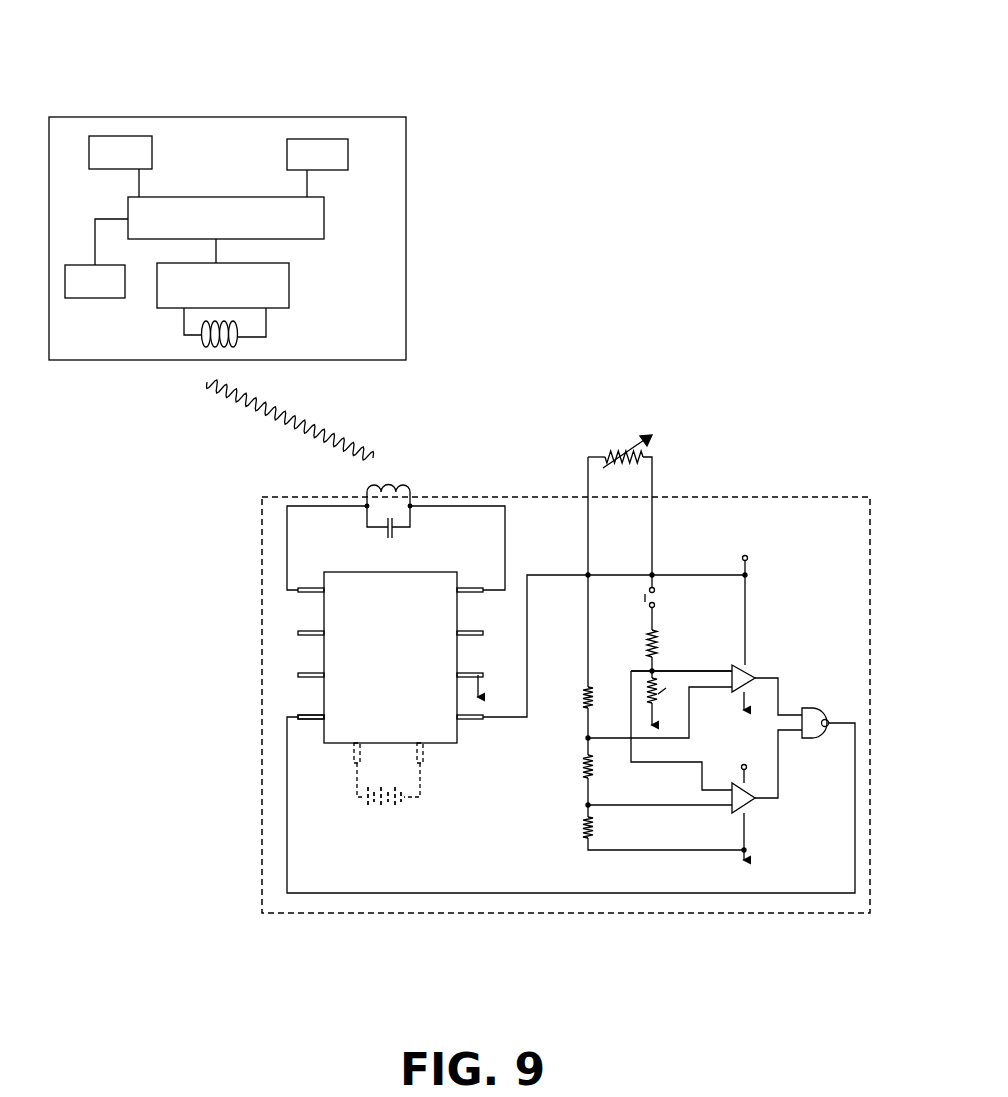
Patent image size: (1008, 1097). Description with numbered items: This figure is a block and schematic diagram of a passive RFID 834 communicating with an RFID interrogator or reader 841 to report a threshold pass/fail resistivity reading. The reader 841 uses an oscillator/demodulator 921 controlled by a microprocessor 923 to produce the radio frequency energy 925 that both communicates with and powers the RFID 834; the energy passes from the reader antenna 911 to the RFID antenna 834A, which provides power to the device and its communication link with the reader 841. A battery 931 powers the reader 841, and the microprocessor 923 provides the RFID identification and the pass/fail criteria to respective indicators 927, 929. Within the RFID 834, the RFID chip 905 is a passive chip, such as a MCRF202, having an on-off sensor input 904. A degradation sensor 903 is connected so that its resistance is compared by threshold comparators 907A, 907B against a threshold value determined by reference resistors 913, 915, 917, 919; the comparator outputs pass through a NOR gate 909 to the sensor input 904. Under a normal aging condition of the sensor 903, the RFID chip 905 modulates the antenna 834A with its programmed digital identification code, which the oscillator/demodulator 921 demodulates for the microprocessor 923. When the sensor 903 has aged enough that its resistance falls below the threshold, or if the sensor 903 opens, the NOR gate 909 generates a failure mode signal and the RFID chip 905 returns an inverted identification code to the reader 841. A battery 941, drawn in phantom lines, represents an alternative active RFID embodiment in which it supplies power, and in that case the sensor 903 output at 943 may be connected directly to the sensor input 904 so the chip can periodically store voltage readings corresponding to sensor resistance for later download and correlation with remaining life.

The reader 841 is at (212, 85).
The indicator 929 is at (100, 136).
The indicator 927 is at (348, 145).
The microprocessor 923 is at (324, 215).
The oscillator/demodulator 921 is at (289, 288).
The battery 931 is at (80, 298).
The antenna 911 is at (200, 340).
The radio frequency energy 925 is at (327, 422).
The RFID 834 is at (560, 435).
The antenna 834A is at (390, 487).
The RFID chip 905 is at (420, 572).
The degradation sensor 903 is at (620, 437).
The sensor output 943 is at (681, 668).
The threshold comparator 907A is at (748, 667).
The threshold comparator 907B is at (760, 805).
The NOR gate 909 is at (818, 735).
The reference resistor 913 is at (660, 693).
The reference resistor 915 is at (555, 722).
The reference resistor 917 is at (580, 770).
The reference resistor 919 is at (580, 830).
The sensor input 904 is at (310, 713).
The battery 941 is at (367, 808).